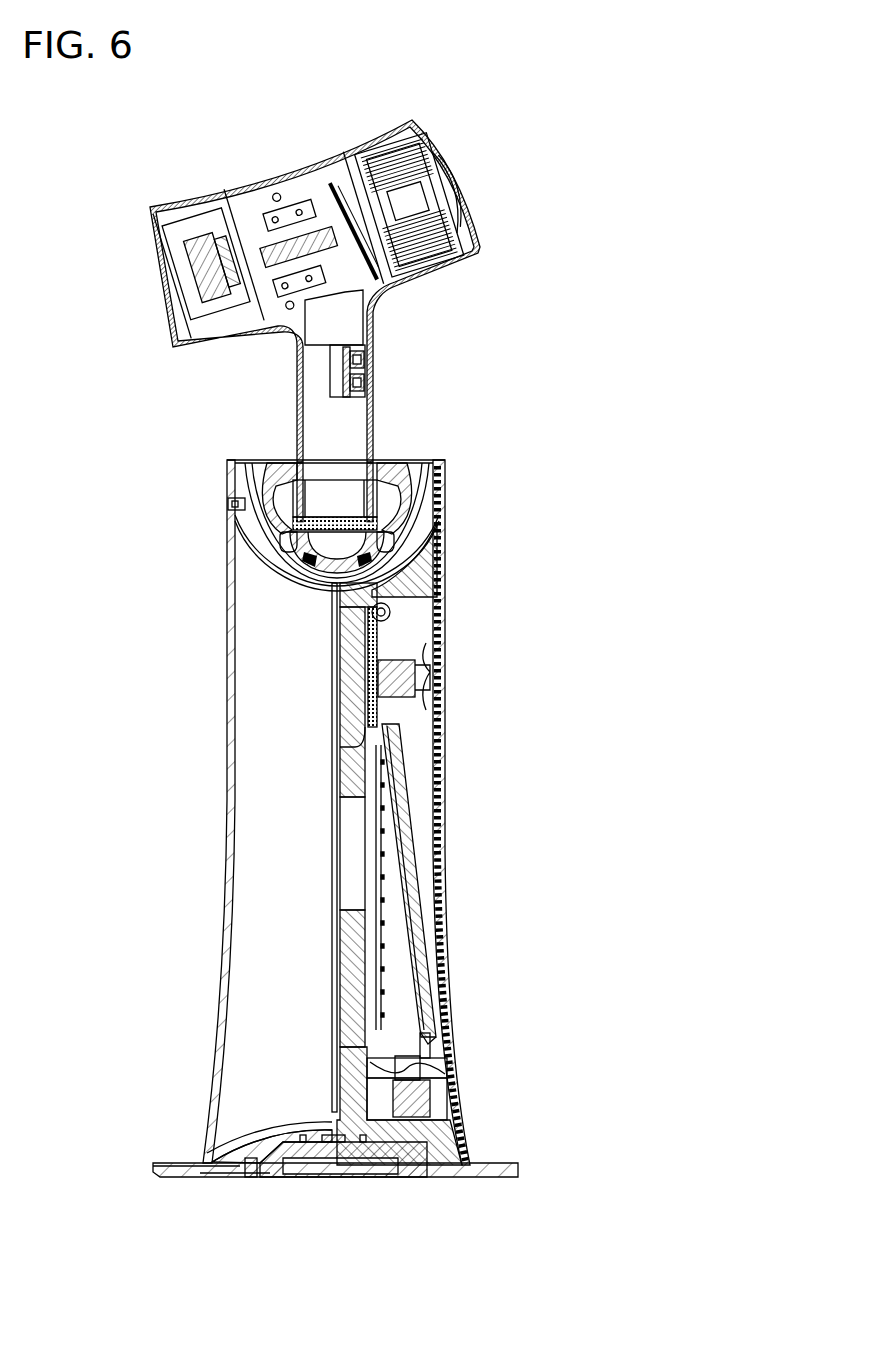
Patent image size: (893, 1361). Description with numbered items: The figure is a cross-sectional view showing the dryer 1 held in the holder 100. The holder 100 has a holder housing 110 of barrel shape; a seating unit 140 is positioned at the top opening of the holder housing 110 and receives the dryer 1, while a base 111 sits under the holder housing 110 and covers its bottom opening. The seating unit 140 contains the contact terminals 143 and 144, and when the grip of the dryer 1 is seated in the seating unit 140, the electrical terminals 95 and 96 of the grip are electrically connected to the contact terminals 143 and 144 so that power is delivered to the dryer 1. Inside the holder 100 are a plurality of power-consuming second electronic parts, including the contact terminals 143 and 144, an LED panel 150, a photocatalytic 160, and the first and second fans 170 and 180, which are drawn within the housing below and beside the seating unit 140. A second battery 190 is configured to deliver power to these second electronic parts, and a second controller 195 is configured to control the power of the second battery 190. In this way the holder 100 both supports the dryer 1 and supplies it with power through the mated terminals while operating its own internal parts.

The dryer 1 is at (444, 145).
The holder 100 is at (462, 622).
The holder housing 110 is at (223, 937).
The base 111 is at (148, 1168).
The seating unit 140 is at (407, 460).
The contact terminal 143 is at (290, 540).
The contact terminal 144 is at (331, 577).
The electrical terminal 95 is at (387, 527).
The electrical terminal 96 is at (382, 572).
The LED panel 150 is at (337, 990).
The photocatalytic 160 is at (400, 810).
The first fan 170 is at (422, 1062).
The second fan 180 is at (433, 670).
The second battery 190 is at (357, 968).
The second controller 195 is at (378, 935).